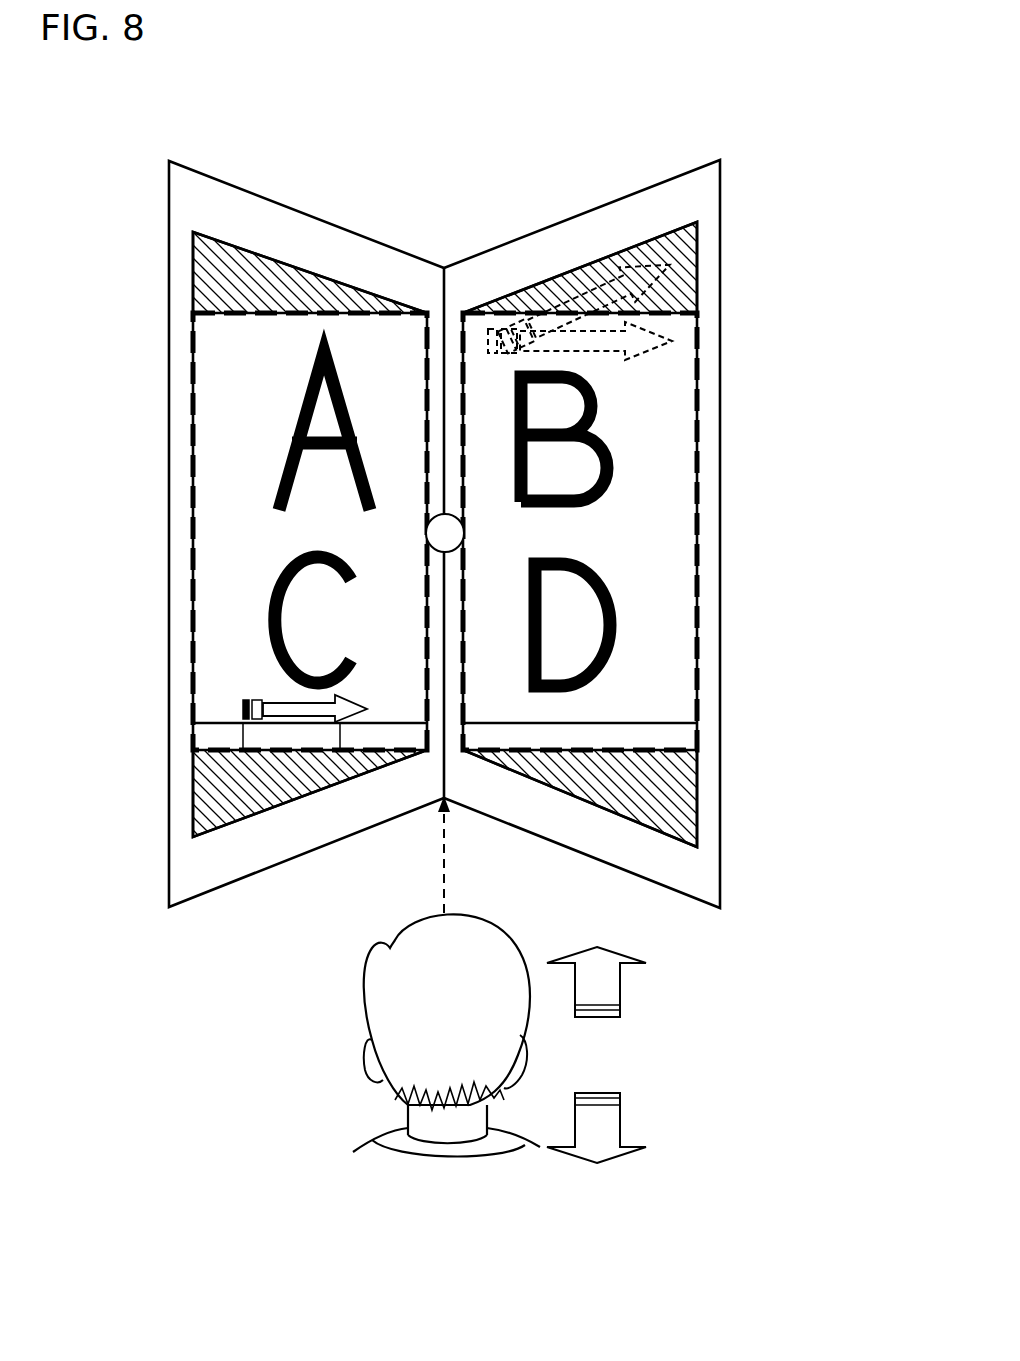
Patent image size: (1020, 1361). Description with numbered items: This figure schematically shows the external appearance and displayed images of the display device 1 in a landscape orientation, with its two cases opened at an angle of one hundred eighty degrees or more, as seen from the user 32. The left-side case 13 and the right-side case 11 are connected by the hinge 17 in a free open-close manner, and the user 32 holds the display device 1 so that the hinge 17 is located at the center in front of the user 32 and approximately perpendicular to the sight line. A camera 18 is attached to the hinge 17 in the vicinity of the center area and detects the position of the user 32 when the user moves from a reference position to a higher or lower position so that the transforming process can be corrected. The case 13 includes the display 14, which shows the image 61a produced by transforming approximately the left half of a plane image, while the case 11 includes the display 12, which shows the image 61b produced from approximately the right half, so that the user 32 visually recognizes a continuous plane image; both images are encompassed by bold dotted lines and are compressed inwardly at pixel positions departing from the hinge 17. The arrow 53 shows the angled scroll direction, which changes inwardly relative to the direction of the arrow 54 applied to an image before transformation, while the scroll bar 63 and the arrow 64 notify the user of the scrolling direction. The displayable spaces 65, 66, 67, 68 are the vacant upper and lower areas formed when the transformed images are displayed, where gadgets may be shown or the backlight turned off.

The display device 1 is at (375, 200).
The case 11 is at (708, 190).
The display 12 is at (675, 407).
The case 13 is at (193, 207).
The display 14 is at (212, 352).
The hinge 17 is at (444, 265).
The camera 18 is at (432, 530).
The user 32 is at (443, 1137).
The arrow 53 is at (640, 340).
The arrow 54 is at (573, 303).
The image 61a is at (225, 535).
The image 61b is at (648, 535).
The scroll bar 63 is at (217, 738).
The arrow image 64 is at (305, 712).
The displayable space 65 is at (243, 272).
The displayable space 66 is at (237, 797).
The displayable space 67 is at (683, 280).
The displayable space 68 is at (667, 797).